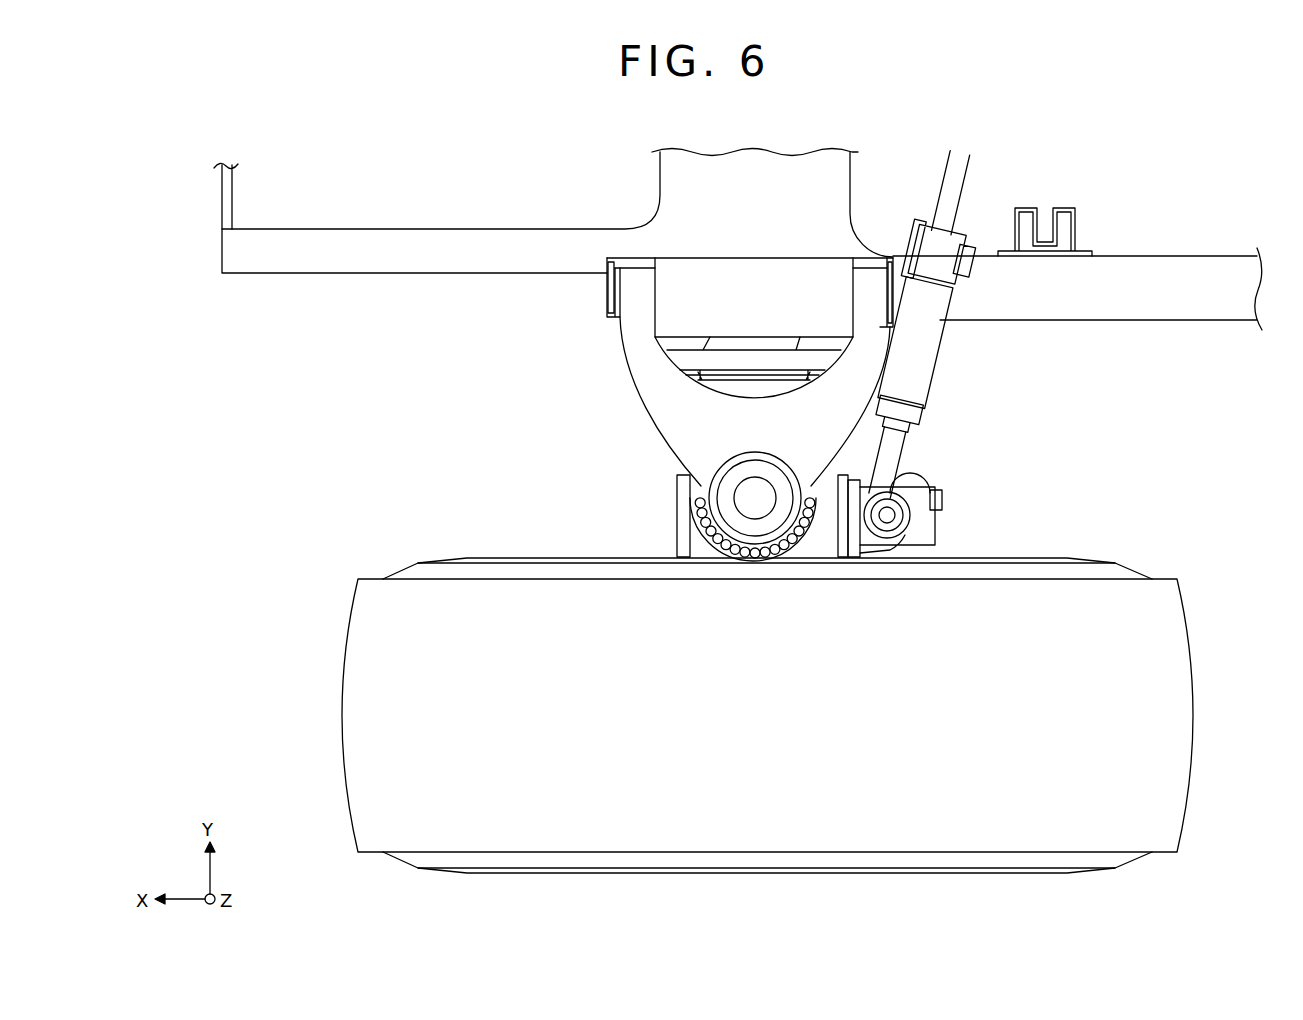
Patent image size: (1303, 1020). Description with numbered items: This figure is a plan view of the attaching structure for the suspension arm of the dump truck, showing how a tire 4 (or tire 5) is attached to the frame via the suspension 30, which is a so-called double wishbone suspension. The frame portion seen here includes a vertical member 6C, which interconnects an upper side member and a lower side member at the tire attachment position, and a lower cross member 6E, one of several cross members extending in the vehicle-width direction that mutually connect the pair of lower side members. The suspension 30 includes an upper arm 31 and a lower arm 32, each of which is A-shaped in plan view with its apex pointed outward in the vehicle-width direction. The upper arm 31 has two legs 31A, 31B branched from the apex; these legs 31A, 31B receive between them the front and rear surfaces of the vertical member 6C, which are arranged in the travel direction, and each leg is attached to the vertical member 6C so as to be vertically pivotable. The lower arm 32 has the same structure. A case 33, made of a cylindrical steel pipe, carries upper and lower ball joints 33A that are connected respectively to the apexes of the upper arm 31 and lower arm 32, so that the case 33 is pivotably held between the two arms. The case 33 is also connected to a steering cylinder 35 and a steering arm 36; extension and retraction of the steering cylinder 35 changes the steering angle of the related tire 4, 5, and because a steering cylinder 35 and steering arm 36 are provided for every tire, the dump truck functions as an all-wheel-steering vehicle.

The lower cross member 6E is at (748, 154).
The vertical member 6C is at (718, 268).
The suspension 30 is at (497, 394).
The upper arm 31 is at (789, 347).
The lower arm 32 is at (789, 347).
The leg 31A is at (620, 306).
The leg 31B is at (935, 290).
The case 33 is at (773, 500).
The ball joint 33A is at (745, 497).
The steering cylinder 35 is at (917, 358).
The steering arm 36 is at (913, 442).
The tire 4 is at (1158, 590).
The tire 5 is at (780, 688).